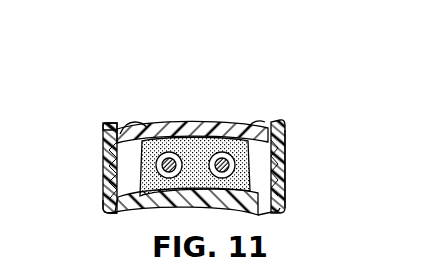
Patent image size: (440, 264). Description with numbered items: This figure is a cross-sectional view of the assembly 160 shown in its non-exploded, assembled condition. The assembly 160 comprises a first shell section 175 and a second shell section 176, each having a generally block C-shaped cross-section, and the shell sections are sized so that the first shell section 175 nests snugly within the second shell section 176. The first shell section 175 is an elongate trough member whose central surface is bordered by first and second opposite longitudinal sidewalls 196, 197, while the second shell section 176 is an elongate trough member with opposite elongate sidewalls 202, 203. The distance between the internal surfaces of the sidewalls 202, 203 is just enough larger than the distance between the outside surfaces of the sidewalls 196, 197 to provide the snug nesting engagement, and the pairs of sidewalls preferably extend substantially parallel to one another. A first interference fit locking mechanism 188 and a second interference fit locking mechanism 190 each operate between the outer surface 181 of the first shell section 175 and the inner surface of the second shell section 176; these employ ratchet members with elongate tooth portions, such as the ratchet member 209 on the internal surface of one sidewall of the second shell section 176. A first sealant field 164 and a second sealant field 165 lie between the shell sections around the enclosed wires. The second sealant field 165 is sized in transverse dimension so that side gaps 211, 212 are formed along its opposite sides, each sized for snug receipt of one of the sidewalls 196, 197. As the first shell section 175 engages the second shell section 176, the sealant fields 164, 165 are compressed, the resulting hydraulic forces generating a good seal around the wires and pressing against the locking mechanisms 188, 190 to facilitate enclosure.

The assembly 160 is at (268, 105).
The first sealant field 164 is at (200, 142).
The second sealant field 165 is at (257, 213).
The first shell section 175 is at (143, 122).
The second shell section 176 is at (138, 212).
The outer surface 181 is at (163, 121).
The first interference fit locking mechanism 188 is at (124, 119).
The second interference fit locking mechanism 190 is at (281, 108).
The first longitudinal sidewall 196 is at (195, 130).
The second longitudinal sidewall 197 is at (250, 150).
The sidewall 202 is at (103, 171).
The sidewall 203 is at (287, 178).
The first ratchet member 209 is at (116, 156).
The side gap 211 is at (106, 216).
The side gap 212 is at (270, 207).